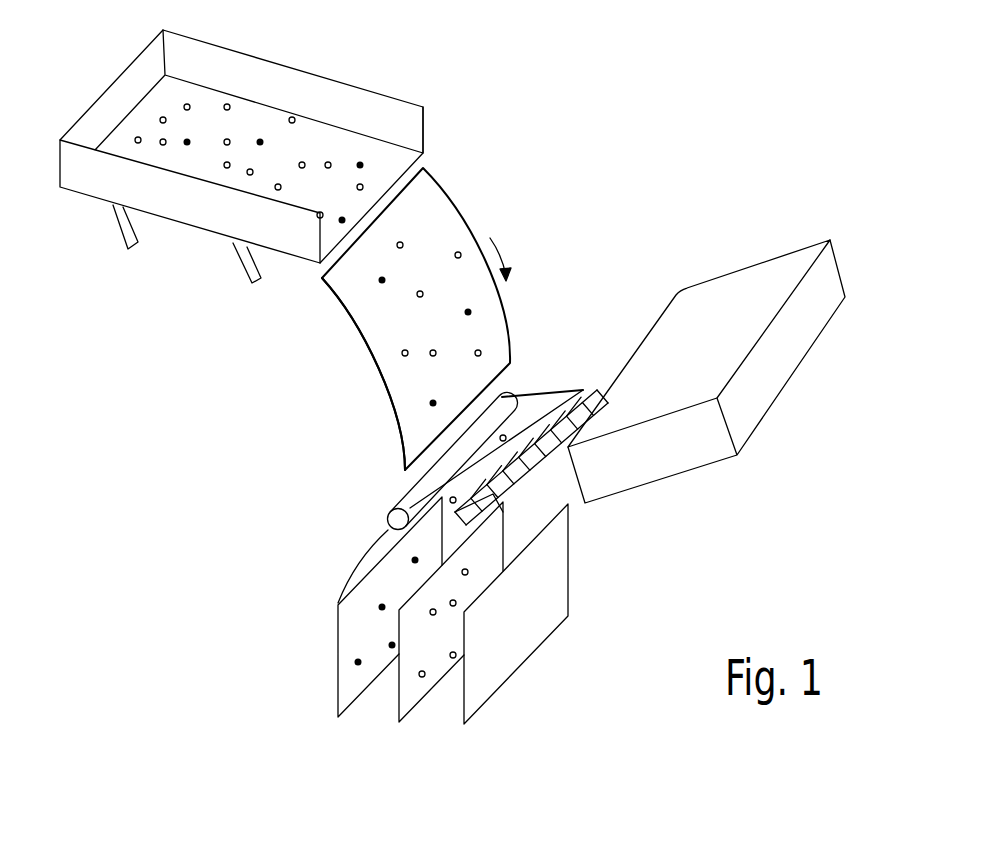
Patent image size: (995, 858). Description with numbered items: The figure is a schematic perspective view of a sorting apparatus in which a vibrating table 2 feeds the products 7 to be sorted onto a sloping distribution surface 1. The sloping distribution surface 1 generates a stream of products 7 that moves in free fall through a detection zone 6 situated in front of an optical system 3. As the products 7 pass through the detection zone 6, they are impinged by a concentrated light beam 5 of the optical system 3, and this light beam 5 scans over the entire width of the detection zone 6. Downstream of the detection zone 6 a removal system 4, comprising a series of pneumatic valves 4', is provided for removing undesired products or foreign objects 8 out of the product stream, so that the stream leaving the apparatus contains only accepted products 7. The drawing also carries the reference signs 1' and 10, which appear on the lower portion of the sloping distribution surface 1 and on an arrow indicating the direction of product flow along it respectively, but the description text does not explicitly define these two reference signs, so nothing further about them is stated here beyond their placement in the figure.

The sloping distribution surface 1 is at (432, 281).
The lower portion of curved plate 1' is at (341, 374).
The vibrating table 2 is at (376, 85).
The optical system 3 is at (740, 293).
The removal system 4 is at (575, 504).
The pneumatic valves 4' is at (521, 402).
The concentrated light beam 5 is at (543, 393).
The detection zone 6 is at (387, 515).
The products 7 is at (379, 281).
The undesired products or foreign objects 8 is at (229, 140).
The flow direction arrow 10 is at (490, 238).